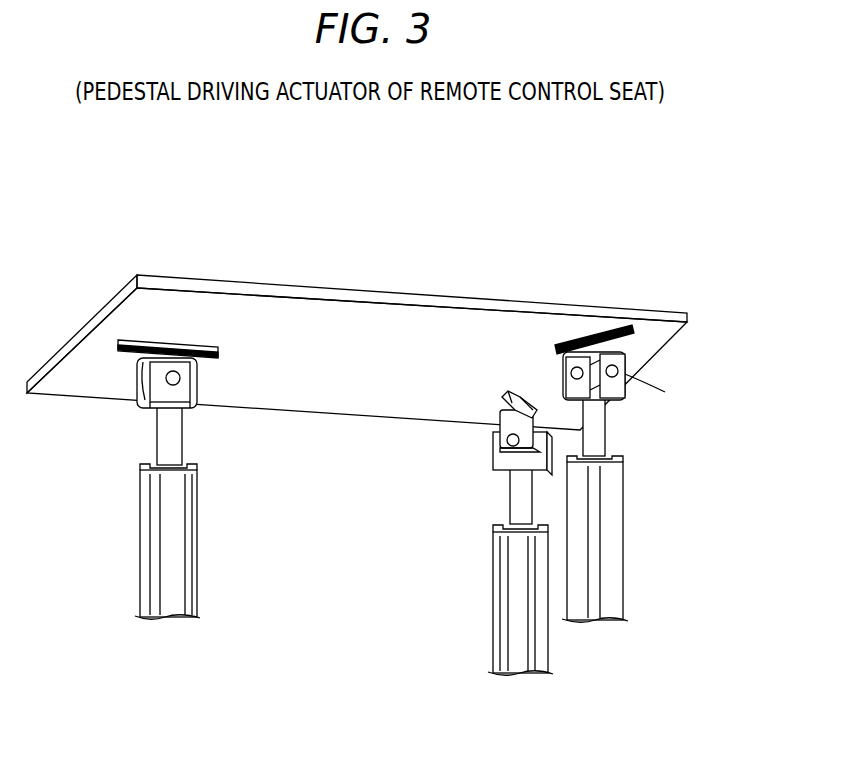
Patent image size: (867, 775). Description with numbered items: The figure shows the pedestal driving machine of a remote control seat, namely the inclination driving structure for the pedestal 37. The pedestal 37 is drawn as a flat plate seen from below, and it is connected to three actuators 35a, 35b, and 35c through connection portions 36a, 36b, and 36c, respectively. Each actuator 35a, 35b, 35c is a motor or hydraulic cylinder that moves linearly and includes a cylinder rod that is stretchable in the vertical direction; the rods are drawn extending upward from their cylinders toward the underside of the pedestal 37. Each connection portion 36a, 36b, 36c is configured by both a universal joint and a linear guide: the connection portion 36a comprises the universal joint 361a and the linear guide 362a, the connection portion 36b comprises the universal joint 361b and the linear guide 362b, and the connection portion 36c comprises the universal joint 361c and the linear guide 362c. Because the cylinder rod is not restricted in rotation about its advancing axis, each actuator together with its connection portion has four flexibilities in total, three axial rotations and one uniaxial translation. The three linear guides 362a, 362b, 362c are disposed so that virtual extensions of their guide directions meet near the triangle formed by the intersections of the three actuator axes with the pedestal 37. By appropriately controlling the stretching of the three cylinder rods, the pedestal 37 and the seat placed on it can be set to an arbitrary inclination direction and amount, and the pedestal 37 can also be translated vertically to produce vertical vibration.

The pedestal 37 is at (372, 290).
The actuator 35a is at (146, 532).
The actuator 35b is at (618, 537).
The actuator 35c is at (497, 600).
The connection portion 36a is at (150, 282).
The connection portion 36b is at (615, 277).
The connection portion 36c is at (423, 448).
The universal joint 361a is at (136, 366).
The linear guide 362a is at (174, 340).
The universal joint 361b is at (637, 355).
The linear guide 362b is at (592, 345).
The universal joint 361c is at (493, 463).
The linear guide 362c is at (500, 410).